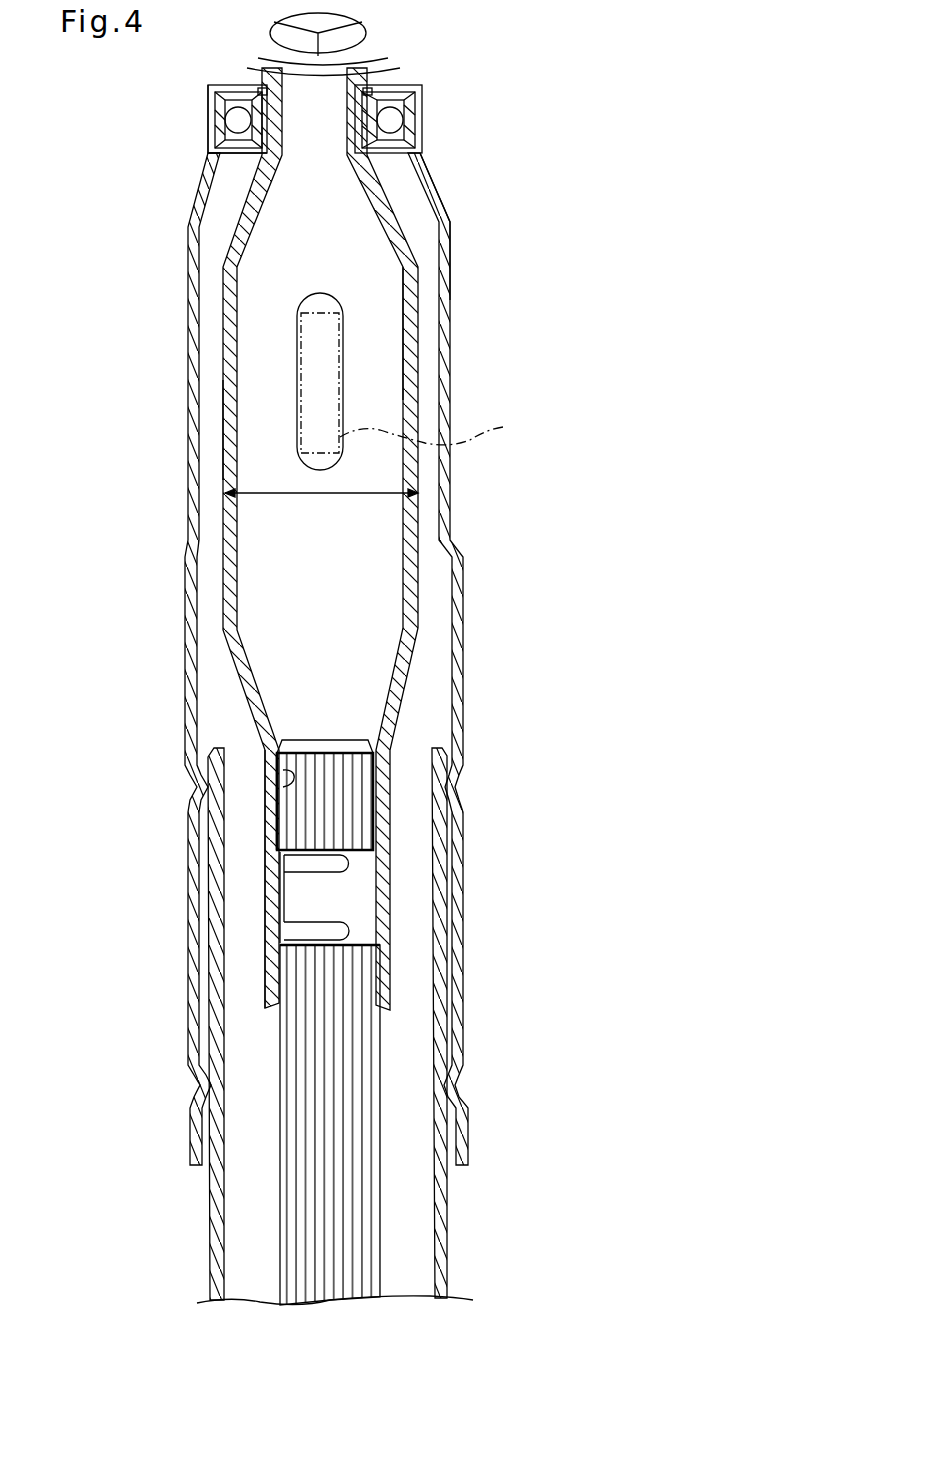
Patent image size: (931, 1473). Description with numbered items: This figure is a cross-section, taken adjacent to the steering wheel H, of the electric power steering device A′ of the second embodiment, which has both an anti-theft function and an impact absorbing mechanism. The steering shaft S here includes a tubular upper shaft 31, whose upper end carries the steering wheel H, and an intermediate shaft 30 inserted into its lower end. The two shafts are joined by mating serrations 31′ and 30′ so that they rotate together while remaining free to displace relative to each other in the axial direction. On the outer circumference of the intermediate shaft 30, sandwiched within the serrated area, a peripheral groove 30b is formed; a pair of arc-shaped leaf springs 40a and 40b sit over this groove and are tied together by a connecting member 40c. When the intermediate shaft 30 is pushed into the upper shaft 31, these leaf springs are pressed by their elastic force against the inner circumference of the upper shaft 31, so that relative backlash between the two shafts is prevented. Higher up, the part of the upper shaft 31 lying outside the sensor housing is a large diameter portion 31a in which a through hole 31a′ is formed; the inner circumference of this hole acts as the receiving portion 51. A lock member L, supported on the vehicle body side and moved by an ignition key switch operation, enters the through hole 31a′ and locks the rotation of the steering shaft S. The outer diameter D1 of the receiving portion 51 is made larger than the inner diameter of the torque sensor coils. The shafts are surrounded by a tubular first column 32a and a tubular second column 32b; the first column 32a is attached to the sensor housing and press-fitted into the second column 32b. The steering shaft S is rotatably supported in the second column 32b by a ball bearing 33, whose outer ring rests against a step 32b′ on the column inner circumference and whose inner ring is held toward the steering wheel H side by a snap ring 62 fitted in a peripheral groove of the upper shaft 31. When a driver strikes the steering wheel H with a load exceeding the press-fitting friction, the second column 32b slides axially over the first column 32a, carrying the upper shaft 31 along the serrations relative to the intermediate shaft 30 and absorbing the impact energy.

The steering wheel H is at (367, 30).
The snap ring 62 is at (374, 89).
The ball bearing 33 is at (395, 119).
The step 32b′ is at (212, 126).
The second column 32b is at (450, 375).
The electric power steering device A′ is at (440, 196).
The upper shaft 31 is at (413, 522).
The steering shaft S is at (410, 305).
The large diameter portion 31a is at (228, 427).
The receiving portion 51 is at (300, 338).
The through hole 31a′ is at (307, 383).
The lock member L is at (429, 430).
The outer diameter of the receiving portion D1 is at (328, 495).
The intermediate shaft 30 is at (350, 800).
The serration 30′ is at (352, 825).
The serration 31′ is at (280, 792).
The leaf spring 40a is at (290, 865).
The connecting member 40c is at (290, 900).
The leaf spring 40b is at (290, 932).
The peripheral groove 30b is at (356, 940).
The first column 32a is at (450, 1220).